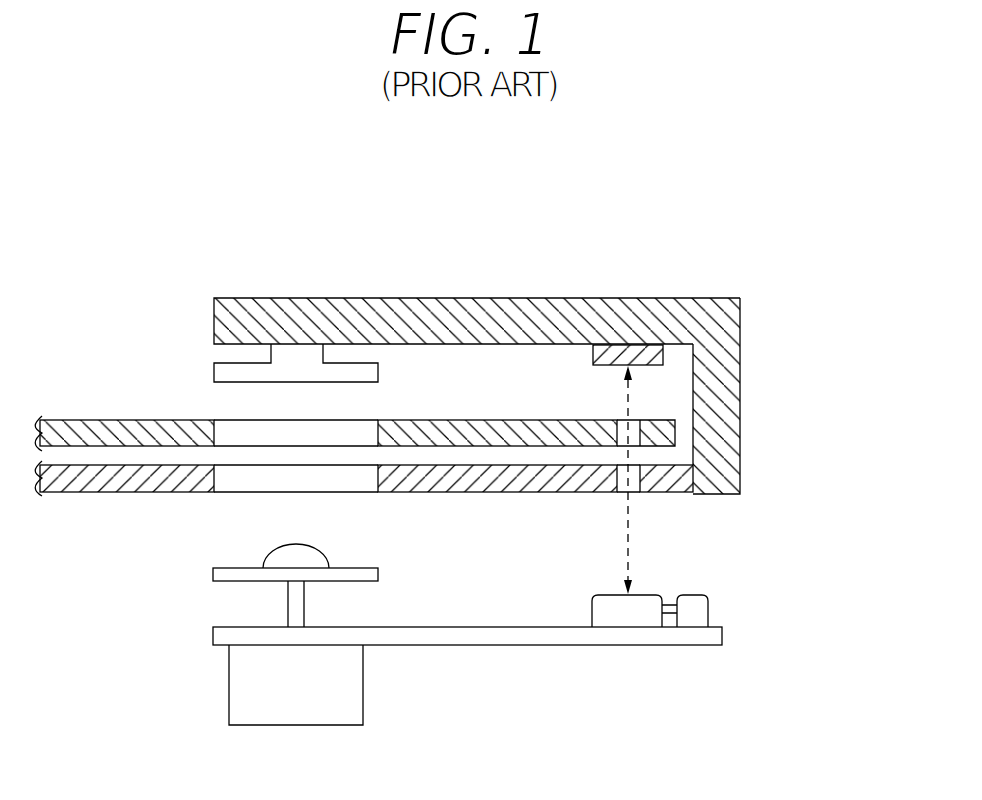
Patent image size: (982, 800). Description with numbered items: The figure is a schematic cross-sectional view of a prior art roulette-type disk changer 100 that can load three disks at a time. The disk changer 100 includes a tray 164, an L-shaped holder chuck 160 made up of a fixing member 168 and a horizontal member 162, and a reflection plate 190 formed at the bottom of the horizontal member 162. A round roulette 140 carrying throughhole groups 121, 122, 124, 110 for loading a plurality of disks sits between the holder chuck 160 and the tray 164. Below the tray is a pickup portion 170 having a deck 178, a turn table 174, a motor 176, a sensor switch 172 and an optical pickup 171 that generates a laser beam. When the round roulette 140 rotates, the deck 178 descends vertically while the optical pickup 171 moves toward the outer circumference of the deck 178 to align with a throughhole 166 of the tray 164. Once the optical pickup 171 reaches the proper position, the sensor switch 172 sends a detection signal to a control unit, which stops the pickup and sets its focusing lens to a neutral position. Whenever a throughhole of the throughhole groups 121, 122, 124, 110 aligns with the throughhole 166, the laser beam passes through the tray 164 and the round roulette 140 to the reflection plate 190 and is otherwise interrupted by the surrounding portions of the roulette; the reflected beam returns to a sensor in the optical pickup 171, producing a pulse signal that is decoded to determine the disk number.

The roulette-type disk changer 100 is at (768, 154).
The L-shaped holder chuck 160 is at (702, 283).
The horizontal member 162 is at (462, 318).
The throughhole 166 is at (633, 487).
The fixing member 168 is at (230, 373).
The reflection plate 190 is at (630, 345).
The round roulette 140 is at (132, 433).
The tray 164 is at (127, 482).
The throughhole group 121 is at (662, 411).
The throughhole group 122 is at (662, 411).
The layer 124 is at (662, 411).
The throughhole group 110 is at (632, 433).
The pickup portion 170 is at (489, 672).
The optical pickup 171 is at (630, 613).
The sensor switch 172 is at (697, 612).
The turn table 174 is at (357, 574).
The motor 176 is at (247, 690).
The deck 178 is at (468, 638).